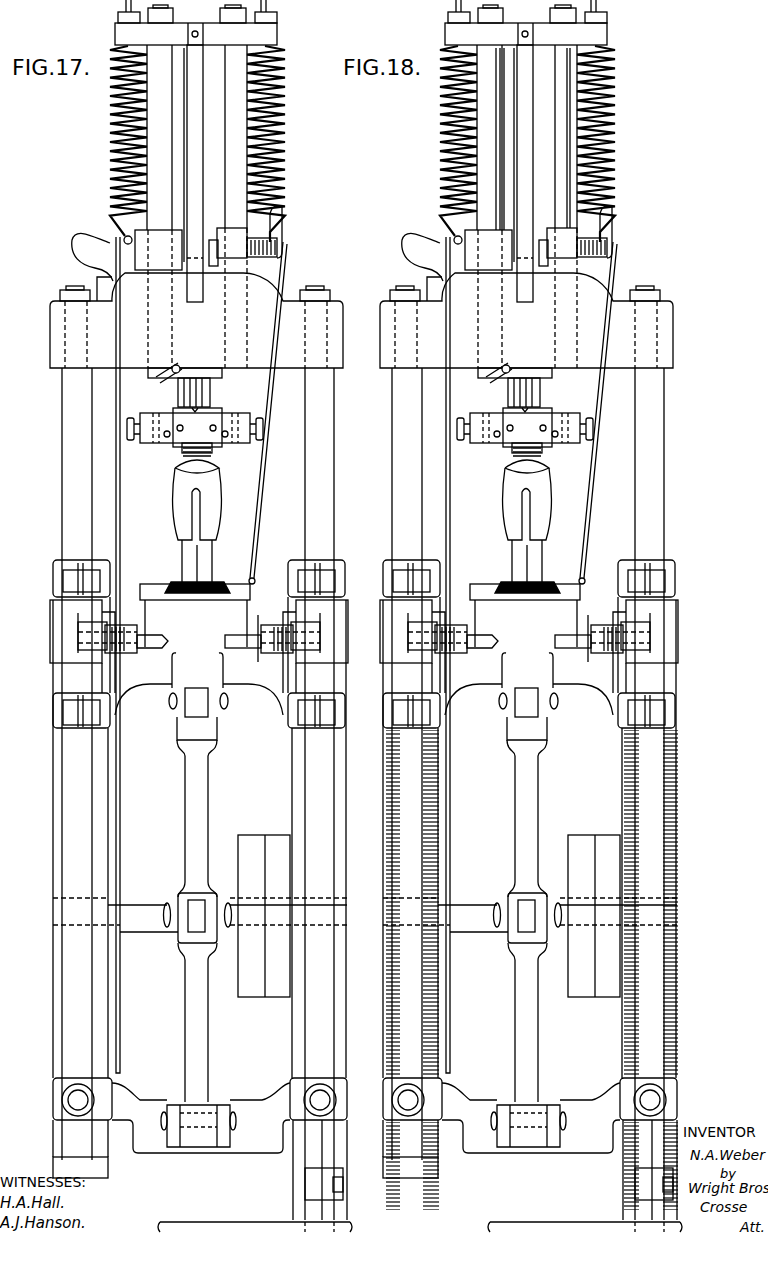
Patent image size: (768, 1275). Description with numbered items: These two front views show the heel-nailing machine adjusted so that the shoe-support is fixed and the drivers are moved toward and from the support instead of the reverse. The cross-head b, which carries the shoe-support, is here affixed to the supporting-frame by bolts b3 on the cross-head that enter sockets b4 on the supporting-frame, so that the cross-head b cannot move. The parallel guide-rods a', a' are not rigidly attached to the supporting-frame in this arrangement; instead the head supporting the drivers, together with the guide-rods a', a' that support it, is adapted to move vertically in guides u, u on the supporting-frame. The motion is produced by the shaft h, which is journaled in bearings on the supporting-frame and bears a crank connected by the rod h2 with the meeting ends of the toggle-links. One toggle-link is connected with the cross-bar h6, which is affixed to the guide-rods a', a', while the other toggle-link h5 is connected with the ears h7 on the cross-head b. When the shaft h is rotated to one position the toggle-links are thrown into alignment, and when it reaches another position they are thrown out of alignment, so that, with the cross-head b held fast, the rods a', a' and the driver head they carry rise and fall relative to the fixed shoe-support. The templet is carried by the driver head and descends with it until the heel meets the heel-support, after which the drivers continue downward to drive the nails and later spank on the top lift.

In FIG. 17, the guide-rods a' is at (221, 794).
In FIG. 18, the guide-rods a' is at (558, 794).
In FIG. 17, the guides u is at (55, 607).
In FIG. 18, the guides u is at (647, 633).
In FIG. 17, the cross-head b is at (195, 636).
In FIG. 18, the cross-head b is at (525, 636).
In FIG. 17, the bolts b3 is at (236, 636).
In FIG. 18, the bolts b3 is at (632, 640).
In FIG. 17, the sockets b4 is at (310, 643).
In FIG. 18, the sockets b4 is at (677, 607).
In FIG. 17, the shaft h is at (132, 917).
In FIG. 18, the shaft h is at (468, 913).
In FIG. 17, the rod h2 is at (196, 913).
In FIG. 18, the rod h2 is at (530, 913).
In FIG. 17, the toggle-link h5 is at (200, 800).
In FIG. 18, the toggle-link h5 is at (537, 788).
In FIG. 17, the cross-bar h6 is at (236, 1112).
In FIG. 18, the cross-bar h6 is at (567, 1100).
In FIG. 17, the ears h7 is at (213, 690).
In FIG. 18, the ears h7 is at (547, 687).